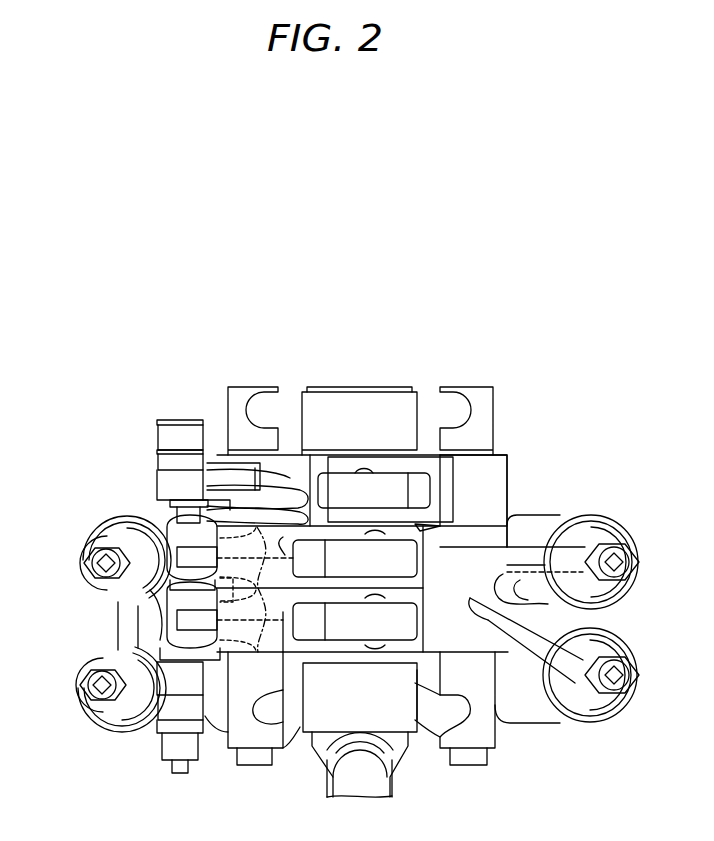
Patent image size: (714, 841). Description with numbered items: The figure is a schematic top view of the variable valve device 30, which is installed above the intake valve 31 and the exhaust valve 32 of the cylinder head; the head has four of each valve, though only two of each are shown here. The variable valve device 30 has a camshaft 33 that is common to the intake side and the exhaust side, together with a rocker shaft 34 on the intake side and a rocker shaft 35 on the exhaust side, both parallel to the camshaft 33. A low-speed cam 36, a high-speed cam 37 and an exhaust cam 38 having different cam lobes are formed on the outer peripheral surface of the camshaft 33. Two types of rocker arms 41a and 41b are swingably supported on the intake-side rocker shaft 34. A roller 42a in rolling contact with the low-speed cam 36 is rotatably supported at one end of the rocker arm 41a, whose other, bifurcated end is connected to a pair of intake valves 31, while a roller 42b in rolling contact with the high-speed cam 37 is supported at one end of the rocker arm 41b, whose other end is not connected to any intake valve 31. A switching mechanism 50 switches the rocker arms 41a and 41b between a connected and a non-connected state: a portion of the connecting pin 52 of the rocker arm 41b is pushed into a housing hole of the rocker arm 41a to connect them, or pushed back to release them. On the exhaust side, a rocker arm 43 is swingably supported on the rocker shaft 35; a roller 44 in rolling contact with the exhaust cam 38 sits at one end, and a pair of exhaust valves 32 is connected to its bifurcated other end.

The variable valve device 30 is at (172, 284).
The intake valve 31 is at (85, 533).
The exhaust valve 32 is at (588, 530).
The camshaft 33 is at (370, 388).
The rocker shaft 34 is at (250, 390).
The rocker shaft 35 is at (477, 388).
The low-speed cam 36 is at (423, 617).
The high-speed cam 37 is at (433, 557).
The exhaust cam 38 is at (428, 487).
The rocker arm 41a is at (283, 613).
The rocker arm 41b is at (283, 537).
The roller 42a is at (352, 650).
The roller 42b is at (380, 650).
The rocker arm 43 is at (490, 500).
The roller 44 is at (353, 485).
The switching mechanism 50 is at (115, 411).
The connecting pin 52 is at (190, 515).